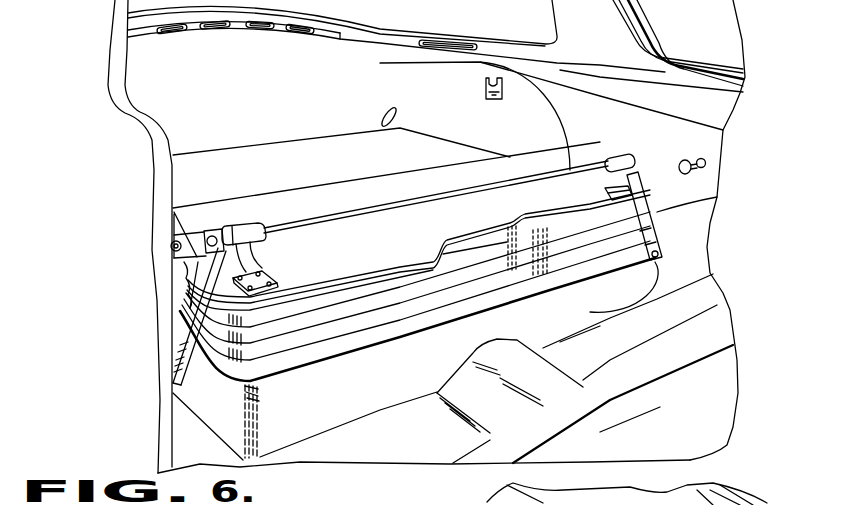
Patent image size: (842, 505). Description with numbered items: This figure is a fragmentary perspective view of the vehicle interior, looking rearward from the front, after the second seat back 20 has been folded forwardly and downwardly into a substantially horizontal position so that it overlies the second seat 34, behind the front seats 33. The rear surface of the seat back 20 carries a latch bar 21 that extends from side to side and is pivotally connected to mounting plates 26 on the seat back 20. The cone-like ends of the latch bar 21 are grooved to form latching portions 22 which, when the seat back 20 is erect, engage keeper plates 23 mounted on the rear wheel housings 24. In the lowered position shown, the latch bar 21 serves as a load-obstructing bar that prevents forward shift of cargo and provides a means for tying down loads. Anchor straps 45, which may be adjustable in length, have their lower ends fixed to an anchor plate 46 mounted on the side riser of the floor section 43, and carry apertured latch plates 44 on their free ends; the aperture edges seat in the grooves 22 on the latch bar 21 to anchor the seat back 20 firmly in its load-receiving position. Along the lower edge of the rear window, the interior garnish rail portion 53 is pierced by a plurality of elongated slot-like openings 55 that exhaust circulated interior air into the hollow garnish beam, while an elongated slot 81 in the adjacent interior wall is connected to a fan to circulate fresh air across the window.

The second seat back 20 is at (567, 250).
The latch bar 21 is at (347, 217).
The latching portions 22 is at (207, 230).
The keeper plates 23 is at (503, 87).
The rear wheel housings 24 is at (540, 125).
The mounting plates 26 is at (273, 280).
The front seats 33 is at (680, 437).
The second seat 34 is at (359, 406).
The vehicle body floor section 43 is at (622, 351).
The latch plates 44 is at (242, 230).
The anchor straps 45 is at (182, 312).
The anchor plate 46 is at (662, 246).
The interior garnish rail portion 53 is at (338, 32).
The slot-like openings 55 is at (300, 33).
The elongated slot 81 is at (447, 51).